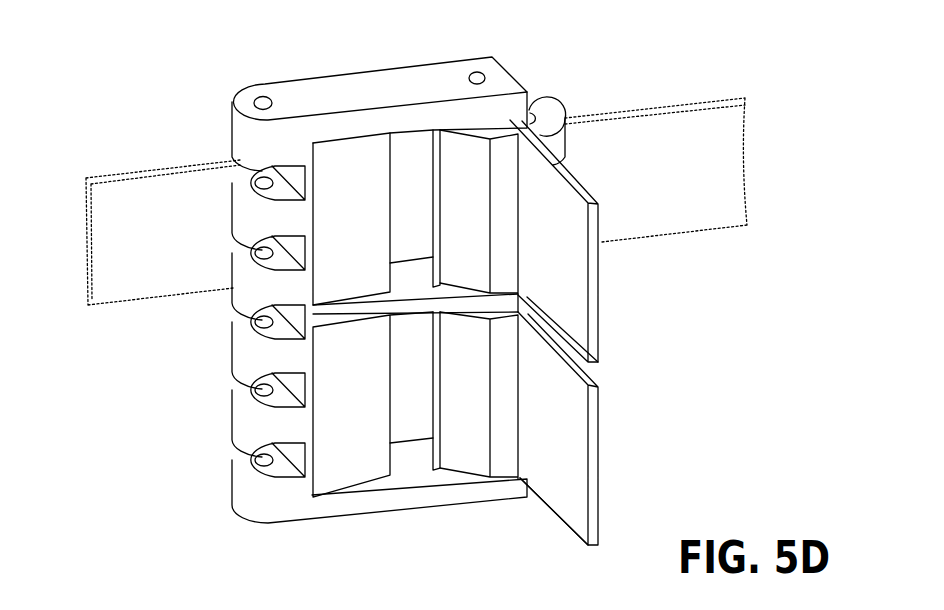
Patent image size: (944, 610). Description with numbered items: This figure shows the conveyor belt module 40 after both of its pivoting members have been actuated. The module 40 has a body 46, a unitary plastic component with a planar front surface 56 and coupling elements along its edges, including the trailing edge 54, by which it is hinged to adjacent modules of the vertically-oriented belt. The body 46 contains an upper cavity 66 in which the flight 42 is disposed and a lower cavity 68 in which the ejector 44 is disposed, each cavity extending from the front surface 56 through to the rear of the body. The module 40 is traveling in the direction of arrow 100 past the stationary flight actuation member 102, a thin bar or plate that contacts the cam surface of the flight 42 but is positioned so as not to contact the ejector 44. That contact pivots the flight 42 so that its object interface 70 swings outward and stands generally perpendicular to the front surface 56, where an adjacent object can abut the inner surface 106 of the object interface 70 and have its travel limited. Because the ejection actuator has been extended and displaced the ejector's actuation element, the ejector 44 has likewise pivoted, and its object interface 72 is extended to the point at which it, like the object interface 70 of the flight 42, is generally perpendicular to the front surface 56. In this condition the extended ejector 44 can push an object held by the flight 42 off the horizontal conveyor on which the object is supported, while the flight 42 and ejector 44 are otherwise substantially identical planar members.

The conveyor belt module 40 is at (150, 57).
The flight 42 is at (636, 297).
The ejector 44 is at (636, 453).
The body 46 is at (372, 80).
The trailing edge 54 is at (182, 481).
The front surface 56 is at (400, 498).
The upper cavity 66 is at (326, 167).
The lower cavity 68 is at (328, 469).
The object interface 70 is at (597, 338).
The object interface 72 is at (593, 530).
The arrow 100 is at (650, 68).
The flight actuation member 102 is at (170, 172).
The inner surface 106 is at (533, 247).